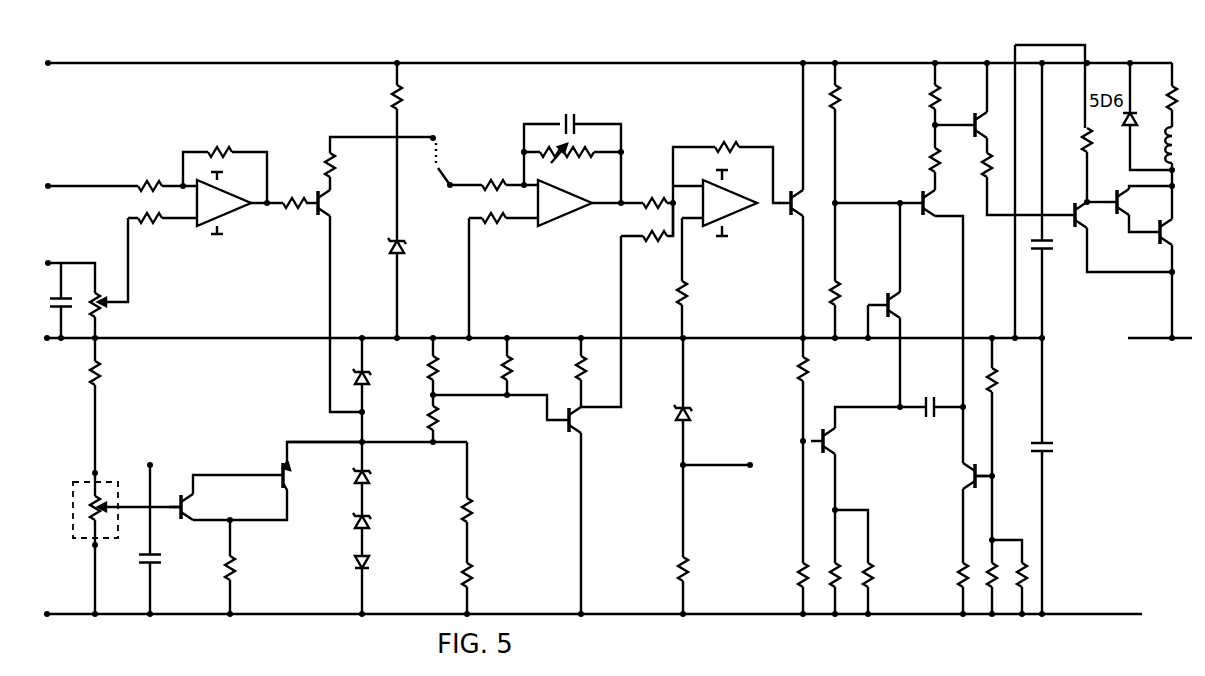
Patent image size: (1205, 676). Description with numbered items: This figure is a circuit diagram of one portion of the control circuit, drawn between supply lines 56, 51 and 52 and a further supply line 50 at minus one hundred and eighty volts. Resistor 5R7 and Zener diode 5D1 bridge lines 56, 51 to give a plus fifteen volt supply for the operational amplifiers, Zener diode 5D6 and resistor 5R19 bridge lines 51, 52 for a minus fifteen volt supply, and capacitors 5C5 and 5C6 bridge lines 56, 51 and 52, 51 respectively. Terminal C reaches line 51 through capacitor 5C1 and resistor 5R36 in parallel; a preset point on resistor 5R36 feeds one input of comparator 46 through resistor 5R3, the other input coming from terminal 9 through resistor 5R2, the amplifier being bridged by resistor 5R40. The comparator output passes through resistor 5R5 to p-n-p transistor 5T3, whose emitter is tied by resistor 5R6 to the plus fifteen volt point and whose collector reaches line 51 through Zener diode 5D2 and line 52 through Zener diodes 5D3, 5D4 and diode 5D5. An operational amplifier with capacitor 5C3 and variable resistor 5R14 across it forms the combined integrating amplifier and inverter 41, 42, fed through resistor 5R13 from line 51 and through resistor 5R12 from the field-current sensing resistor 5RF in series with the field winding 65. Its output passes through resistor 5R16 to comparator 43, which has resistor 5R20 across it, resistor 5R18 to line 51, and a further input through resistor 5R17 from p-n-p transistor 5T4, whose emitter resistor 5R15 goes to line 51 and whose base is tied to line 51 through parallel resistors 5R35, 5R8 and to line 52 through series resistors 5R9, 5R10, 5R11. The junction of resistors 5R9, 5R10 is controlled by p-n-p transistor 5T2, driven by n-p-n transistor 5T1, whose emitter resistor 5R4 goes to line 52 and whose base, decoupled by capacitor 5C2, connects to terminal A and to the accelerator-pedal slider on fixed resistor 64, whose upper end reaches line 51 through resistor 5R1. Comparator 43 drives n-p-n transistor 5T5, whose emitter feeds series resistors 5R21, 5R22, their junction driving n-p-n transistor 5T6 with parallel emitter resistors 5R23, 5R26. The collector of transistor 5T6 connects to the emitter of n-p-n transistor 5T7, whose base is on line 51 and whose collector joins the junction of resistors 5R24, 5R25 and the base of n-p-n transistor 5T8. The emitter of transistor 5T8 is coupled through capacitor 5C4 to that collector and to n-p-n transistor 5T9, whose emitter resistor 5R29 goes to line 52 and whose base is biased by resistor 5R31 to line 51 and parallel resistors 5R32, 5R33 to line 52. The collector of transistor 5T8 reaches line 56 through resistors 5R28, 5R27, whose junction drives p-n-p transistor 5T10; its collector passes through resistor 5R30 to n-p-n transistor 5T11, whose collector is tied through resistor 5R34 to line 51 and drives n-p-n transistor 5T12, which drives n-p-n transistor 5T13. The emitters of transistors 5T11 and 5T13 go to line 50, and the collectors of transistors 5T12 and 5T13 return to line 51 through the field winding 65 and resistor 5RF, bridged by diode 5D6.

The supply line 56 is at (583, 58).
The supply line 51 is at (233, 341).
The supply line 52 is at (782, 614).
The supply line 50 is at (1152, 342).
The terminal g 9 is at (51, 184).
The terminal c C is at (50, 260).
The terminal a A is at (150, 465).
The comparator 46 is at (231, 212).
The integrating amplifier 41 is at (565, 223).
The inverter 42 is at (563, 214).
The comparator 43 is at (733, 212).
The fixed resistor 64 is at (115, 537).
The field winding 65 is at (1154, 148).
The resistor 5R1 is at (114, 417).
The resistor 5R2 is at (164, 176).
The resistor 5R3 is at (162, 210).
The resistor 5R4 is at (250, 567).
The resistor 5R5 is at (281, 193).
The resistor 5R6 is at (379, 157).
The resistor 5R7 is at (419, 149).
The resistor 5R8 is at (452, 372).
The resistor 5R9 is at (454, 425).
The resistor 5R10 is at (492, 502).
The resistor 5R11 is at (493, 588).
The resistor 5R12 is at (494, 175).
The resistor 5R13 is at (503, 275).
The variable resistor 5R14 is at (572, 147).
The resistor 5R15 is at (603, 330).
The resistor 5R16 is at (634, 194).
The resistor 5R17 is at (647, 232).
The resistor 5R18 is at (708, 278).
The resistor 5R19 is at (657, 585).
The resistor 5R20 is at (726, 177).
The resistor 5R21 is at (827, 460).
The resistor 5R22 is at (775, 588).
The resistor 5R23 is at (908, 147).
The resistor 5R24 is at (860, 172).
The resistor 5R25 is at (858, 309).
The resistor 5R26 is at (878, 562).
The resistor 5R27 is at (958, 94).
The resistor 5R28 is at (842, 569).
The resistor 5R29 is at (957, 590).
The resistor 5R30 is at (1001, 184).
The resistor 5R31 is at (1015, 450).
The resistor 5R32 is at (996, 590).
The resistor 5R33 is at (1028, 576).
The resistor 5R34 is at (1068, 160).
The resistor 5R35 is at (530, 368).
The resistor 5R36 is at (118, 278).
The feedback resistor 5R40 is at (225, 166).
The field current measuring resistor 5RF is at (1169, 80).
The capacitor 5C1 is at (66, 296).
The capacitor 5C2 is at (169, 584).
The capacitor 5C3 is at (572, 152).
The capacitor 5C4 is at (931, 398).
The capacitor 5C5 is at (1055, 253).
The capacitor 5C6 is at (1025, 528).
The Zener diode 5D1 is at (417, 286).
The Zener diode 5D2 is at (382, 401).
The Zener diode 5D3 is at (383, 487).
The Zener diode 5D4 is at (383, 530).
The diode 5D5 is at (384, 582).
The Zener diode 5D6 is at (713, 447).
The n-p-n transistor 5T1 is at (228, 497).
The p-n-p transistor 5T2 is at (322, 466).
The p-n-p transistor 5T3 is at (336, 294).
The p-n-p transistor 5T4 is at (589, 425).
The n-p-n transistor 5T5 is at (807, 210).
The n-p-n transistor 5T6 is at (855, 485).
The n-p-n transistor 5T7 is at (905, 305).
The n-p-n transistor 5T8 is at (940, 289).
The n-p-n transistor 5T9 is at (958, 485).
The p-n-p transistor 5T10 is at (984, 120).
The n-p-n transistor 5T11 is at (1119, 238).
The n-p-n transistor 5T12 is at (1139, 209).
The n-p-n transistor 5T13 is at (1143, 252).